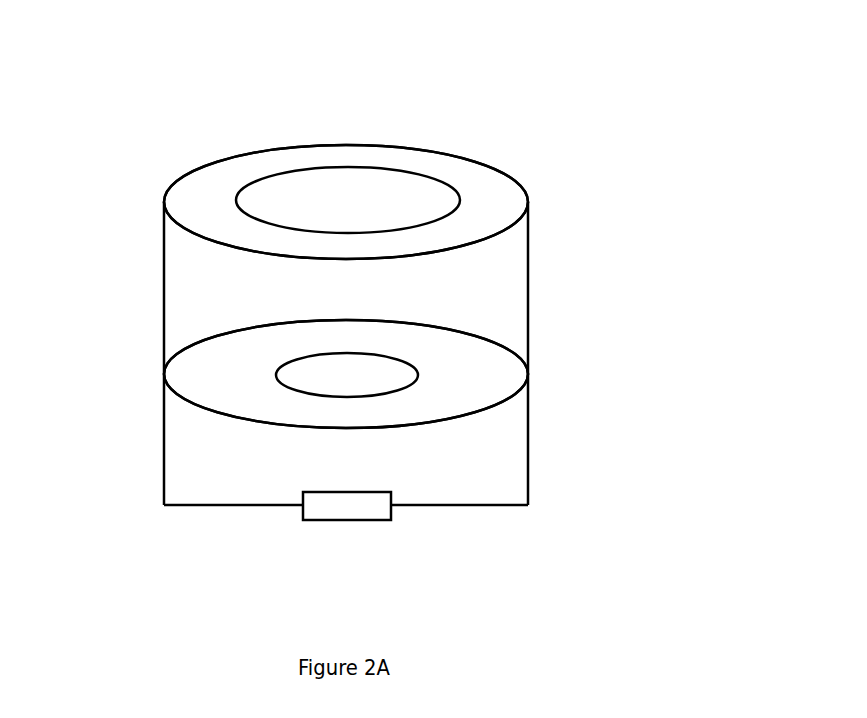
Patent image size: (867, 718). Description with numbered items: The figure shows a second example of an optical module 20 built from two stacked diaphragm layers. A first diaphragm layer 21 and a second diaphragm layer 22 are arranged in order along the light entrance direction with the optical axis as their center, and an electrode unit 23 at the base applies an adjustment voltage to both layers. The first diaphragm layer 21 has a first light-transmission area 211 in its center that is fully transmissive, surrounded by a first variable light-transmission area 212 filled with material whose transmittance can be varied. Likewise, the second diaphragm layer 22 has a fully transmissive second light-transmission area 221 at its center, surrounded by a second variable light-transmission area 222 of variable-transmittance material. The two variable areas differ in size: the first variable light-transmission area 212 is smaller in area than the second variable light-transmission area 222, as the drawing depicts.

The optical module 20 is at (525, 70).
The first diaphragm layer 21 is at (515, 147).
The first light-transmission area 211 is at (277, 200).
The first variable light-transmission area 212 is at (294, 160).
The second diaphragm layer 22 is at (520, 355).
The second light-transmission area 221 is at (338, 368).
The second variable light-transmission area 222 is at (397, 290).
The electrode unit 23 is at (348, 520).